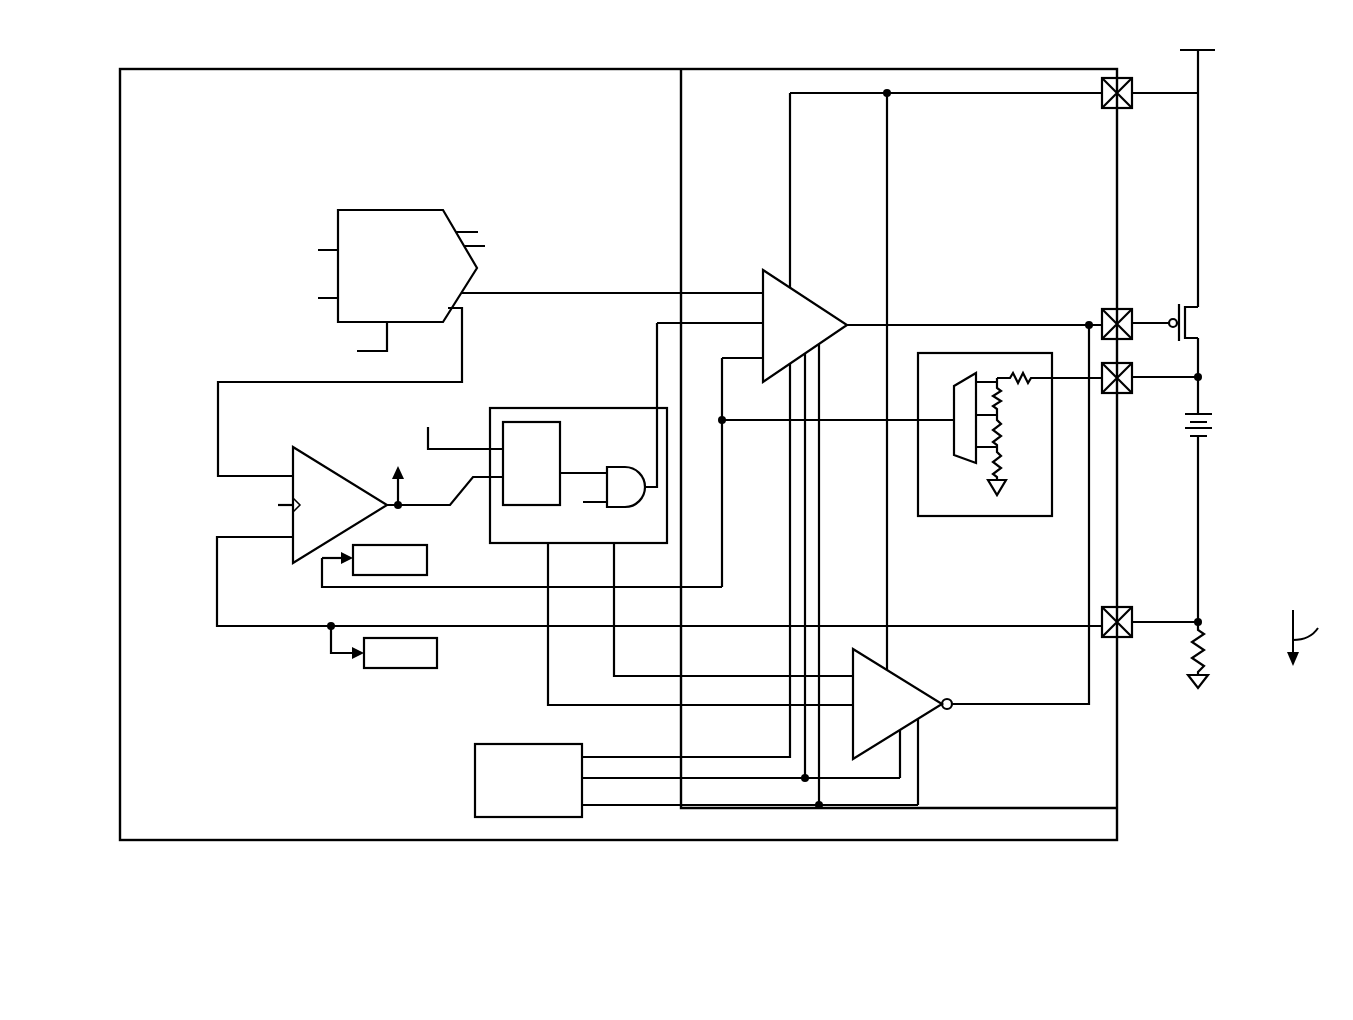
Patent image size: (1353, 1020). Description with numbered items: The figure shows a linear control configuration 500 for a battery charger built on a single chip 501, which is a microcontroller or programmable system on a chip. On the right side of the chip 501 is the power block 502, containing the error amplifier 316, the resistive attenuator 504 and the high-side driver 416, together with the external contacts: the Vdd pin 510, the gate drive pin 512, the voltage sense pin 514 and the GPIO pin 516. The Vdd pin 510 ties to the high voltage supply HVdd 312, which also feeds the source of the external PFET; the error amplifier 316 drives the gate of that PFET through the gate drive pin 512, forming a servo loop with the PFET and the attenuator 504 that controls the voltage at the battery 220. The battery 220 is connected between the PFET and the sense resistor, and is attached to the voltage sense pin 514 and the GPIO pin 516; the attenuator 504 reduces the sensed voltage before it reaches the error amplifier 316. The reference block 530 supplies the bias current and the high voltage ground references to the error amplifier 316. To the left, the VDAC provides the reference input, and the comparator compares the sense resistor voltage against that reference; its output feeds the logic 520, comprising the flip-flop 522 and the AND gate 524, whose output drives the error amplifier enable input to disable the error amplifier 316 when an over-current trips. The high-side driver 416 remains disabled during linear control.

The linear control configuration 500 is at (545, 46).
The chip 501 is at (618, 454).
The power block 502 is at (899, 438).
The attenuator 504 is at (1010, 434).
The Vdd pin 510 is at (1139, 112).
The gate drive pin 512 is at (1148, 339).
The voltage sense pin 514 is at (1141, 393).
The GPIO pin 516 is at (1146, 640).
The logic 520 is at (671, 514).
The flip-flop 522 is at (531, 463).
The AND gate 524 is at (608, 415).
The reference block 530 is at (528, 780).
The HVdd supply 312 is at (1200, 162).
The error amplifier 316 is at (805, 326).
The high-side driver 416 is at (902, 704).
The battery 220 is at (1171, 421).